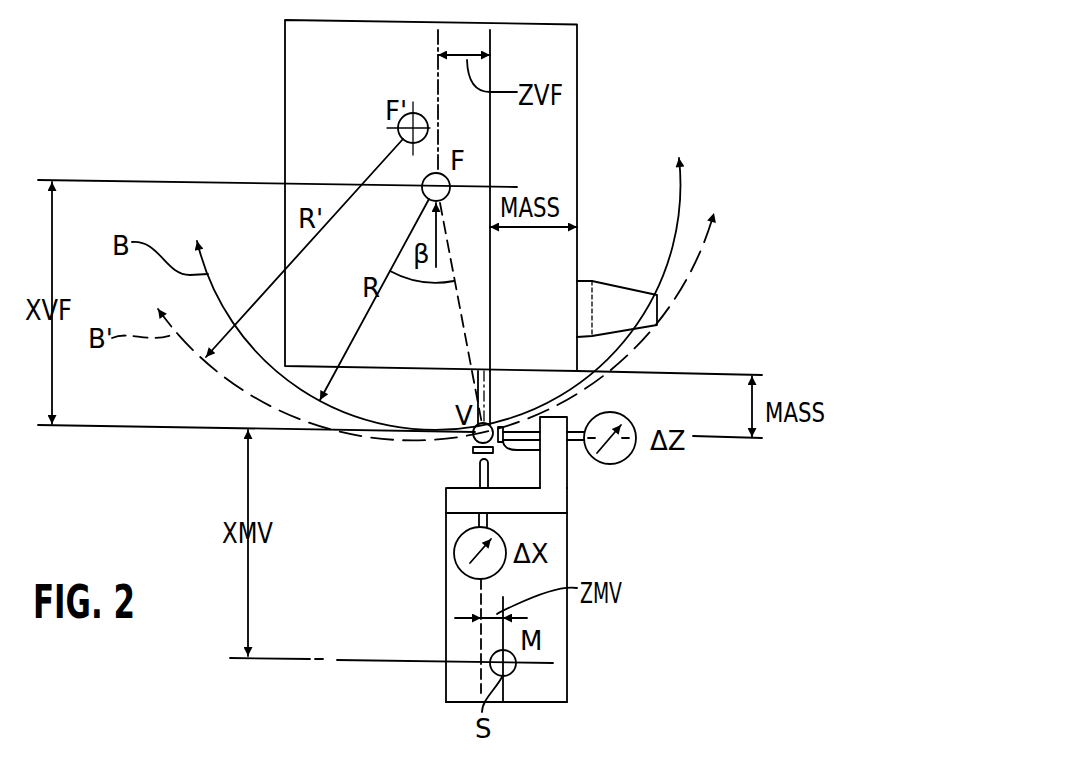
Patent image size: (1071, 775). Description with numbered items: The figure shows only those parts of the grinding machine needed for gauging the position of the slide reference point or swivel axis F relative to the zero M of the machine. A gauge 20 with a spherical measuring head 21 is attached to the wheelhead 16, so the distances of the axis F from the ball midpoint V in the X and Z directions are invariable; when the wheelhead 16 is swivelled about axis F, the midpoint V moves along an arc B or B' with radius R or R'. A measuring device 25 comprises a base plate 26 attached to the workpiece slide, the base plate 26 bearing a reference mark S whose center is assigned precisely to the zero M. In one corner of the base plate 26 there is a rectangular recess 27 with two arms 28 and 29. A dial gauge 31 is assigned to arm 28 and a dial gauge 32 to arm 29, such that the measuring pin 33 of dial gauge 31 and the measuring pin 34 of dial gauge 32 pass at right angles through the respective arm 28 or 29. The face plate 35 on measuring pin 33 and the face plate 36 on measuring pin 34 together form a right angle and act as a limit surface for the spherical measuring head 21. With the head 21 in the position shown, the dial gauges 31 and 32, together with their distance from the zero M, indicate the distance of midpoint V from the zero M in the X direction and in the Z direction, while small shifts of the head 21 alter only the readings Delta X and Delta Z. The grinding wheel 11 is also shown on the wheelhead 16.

The wheelhead 16 is at (284, 78).
The grinding wheel 11 is at (620, 286).
The gauge 20 is at (475, 386).
The spherical measuring head 21 is at (474, 440).
The face plate 35 is at (473, 453).
The measuring pin 33 is at (481, 470).
The measuring pin 34 is at (527, 428).
The face plate 36 is at (513, 444).
The arm of the rectangular recess 29 is at (569, 417).
The dial gauge 32 is at (633, 452).
The rectangular recess 27 is at (525, 481).
The arm of the rectangular recess 28 is at (458, 495).
The dial gauge 31 is at (462, 579).
The measuring device 25 is at (569, 662).
The base plate 26 is at (547, 685).